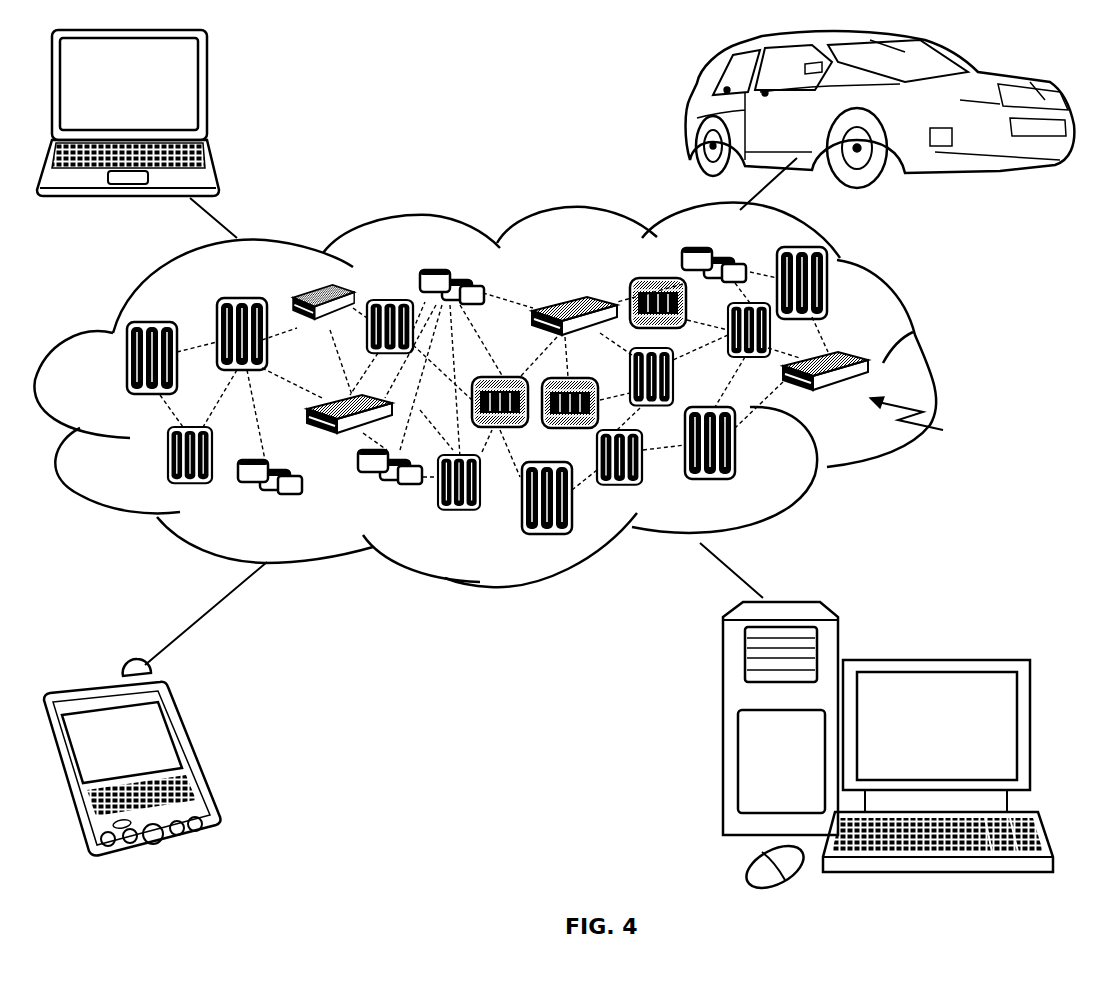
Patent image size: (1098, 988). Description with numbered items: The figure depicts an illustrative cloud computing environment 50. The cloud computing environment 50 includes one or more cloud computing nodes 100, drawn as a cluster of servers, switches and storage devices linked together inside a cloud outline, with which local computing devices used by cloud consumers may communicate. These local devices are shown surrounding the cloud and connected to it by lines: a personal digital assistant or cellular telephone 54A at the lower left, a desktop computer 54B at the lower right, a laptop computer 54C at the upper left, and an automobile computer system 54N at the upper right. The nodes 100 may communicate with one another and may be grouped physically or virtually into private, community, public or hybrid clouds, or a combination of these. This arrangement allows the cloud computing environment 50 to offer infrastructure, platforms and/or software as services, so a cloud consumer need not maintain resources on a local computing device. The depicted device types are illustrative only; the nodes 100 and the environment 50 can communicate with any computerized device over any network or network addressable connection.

The cloud computing environment 50 is at (930, 373).
The personal digital assistant or cellular telephone 54A is at (195, 757).
The desktop computer 54B is at (933, 660).
The laptop computer 54C is at (208, 92).
The automobile computer system 54N is at (693, 102).
The cloud computing nodes 100 is at (946, 423).